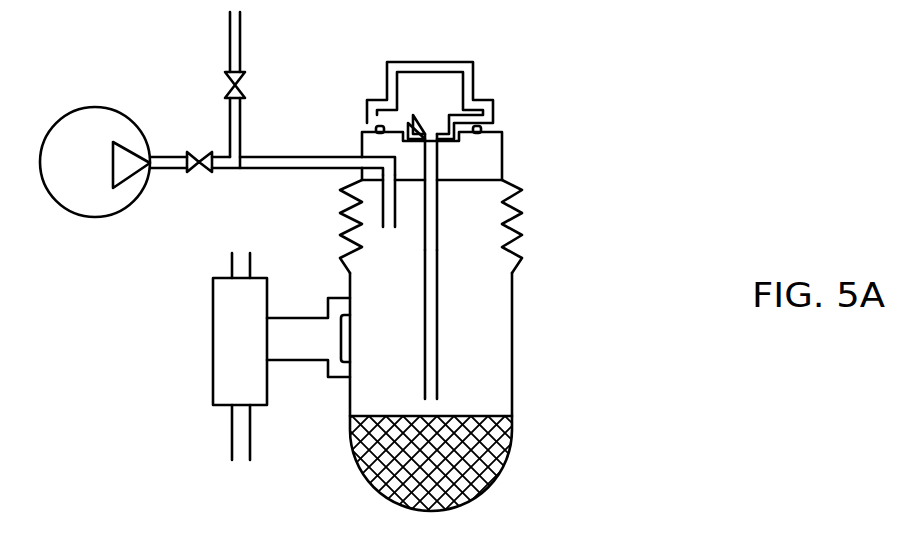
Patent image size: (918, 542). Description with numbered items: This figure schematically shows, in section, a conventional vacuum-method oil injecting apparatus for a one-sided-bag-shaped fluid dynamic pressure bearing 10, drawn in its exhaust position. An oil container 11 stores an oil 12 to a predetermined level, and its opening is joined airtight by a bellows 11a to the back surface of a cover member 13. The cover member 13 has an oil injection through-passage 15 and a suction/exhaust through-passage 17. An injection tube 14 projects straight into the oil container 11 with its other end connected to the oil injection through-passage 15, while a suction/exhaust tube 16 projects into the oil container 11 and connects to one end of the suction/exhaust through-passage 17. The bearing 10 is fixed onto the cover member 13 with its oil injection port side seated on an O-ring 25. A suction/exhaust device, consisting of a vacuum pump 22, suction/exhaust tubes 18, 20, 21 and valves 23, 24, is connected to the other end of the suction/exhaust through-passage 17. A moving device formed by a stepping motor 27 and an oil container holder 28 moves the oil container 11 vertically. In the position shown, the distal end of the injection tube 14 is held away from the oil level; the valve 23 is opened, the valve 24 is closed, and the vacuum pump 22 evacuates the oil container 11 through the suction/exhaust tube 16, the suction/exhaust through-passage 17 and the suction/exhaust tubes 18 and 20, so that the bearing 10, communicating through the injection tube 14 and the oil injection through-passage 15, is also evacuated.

The one-sided-bag-shaped fluid dynamic pressure bearing 10 is at (475, 73).
The oil container 11 is at (495, 383).
The bellows 11a is at (517, 233).
The oil 12 is at (477, 457).
The cover member 13 is at (487, 158).
The injection tube 14 is at (428, 348).
The oil injection through-passage 15 is at (485, 133).
The suction/exhaust tube 16 is at (390, 190).
The suction/exhaust through-passage 17 is at (375, 156).
The suction/exhaust tube 18 is at (267, 160).
The suction/exhaust tube 20 is at (170, 169).
The suction/exhaust tube 21 is at (230, 23).
The vacuum pump 22 is at (68, 190).
The valve 23 is at (203, 175).
The valve 24 is at (228, 82).
The O-ring 25 is at (437, 163).
The stepping motor 27 is at (233, 367).
The oil container holder 28 is at (302, 340).